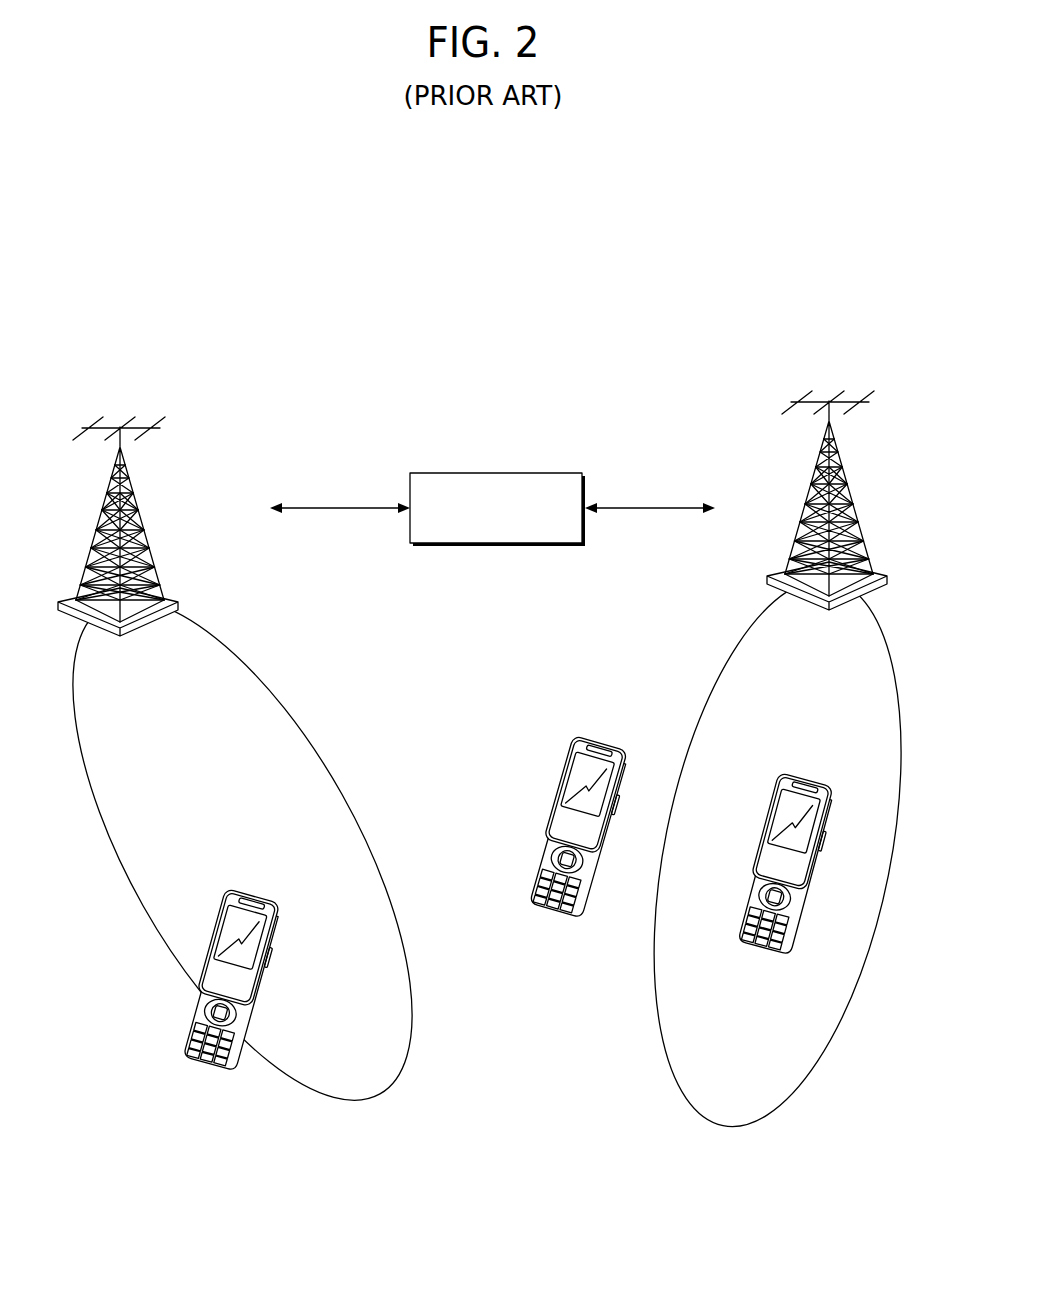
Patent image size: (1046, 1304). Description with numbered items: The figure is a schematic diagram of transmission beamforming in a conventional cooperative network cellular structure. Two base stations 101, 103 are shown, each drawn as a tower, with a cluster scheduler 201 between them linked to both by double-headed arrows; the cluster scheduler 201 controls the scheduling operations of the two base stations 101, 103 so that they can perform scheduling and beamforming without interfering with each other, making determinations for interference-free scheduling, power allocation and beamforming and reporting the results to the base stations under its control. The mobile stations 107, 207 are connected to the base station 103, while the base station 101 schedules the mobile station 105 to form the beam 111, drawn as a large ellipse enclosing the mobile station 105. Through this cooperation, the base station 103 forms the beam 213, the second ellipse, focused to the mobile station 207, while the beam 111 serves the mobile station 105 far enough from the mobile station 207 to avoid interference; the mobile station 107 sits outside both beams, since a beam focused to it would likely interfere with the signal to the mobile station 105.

The base station 101 is at (143, 521).
The base station 103 is at (851, 498).
The mobile station 105 is at (213, 1060).
The mobile station 107 is at (600, 742).
The beam 111 is at (287, 708).
The cluster scheduler 201 is at (523, 473).
The mobile station 207 is at (815, 886).
The beam 213 is at (715, 688).